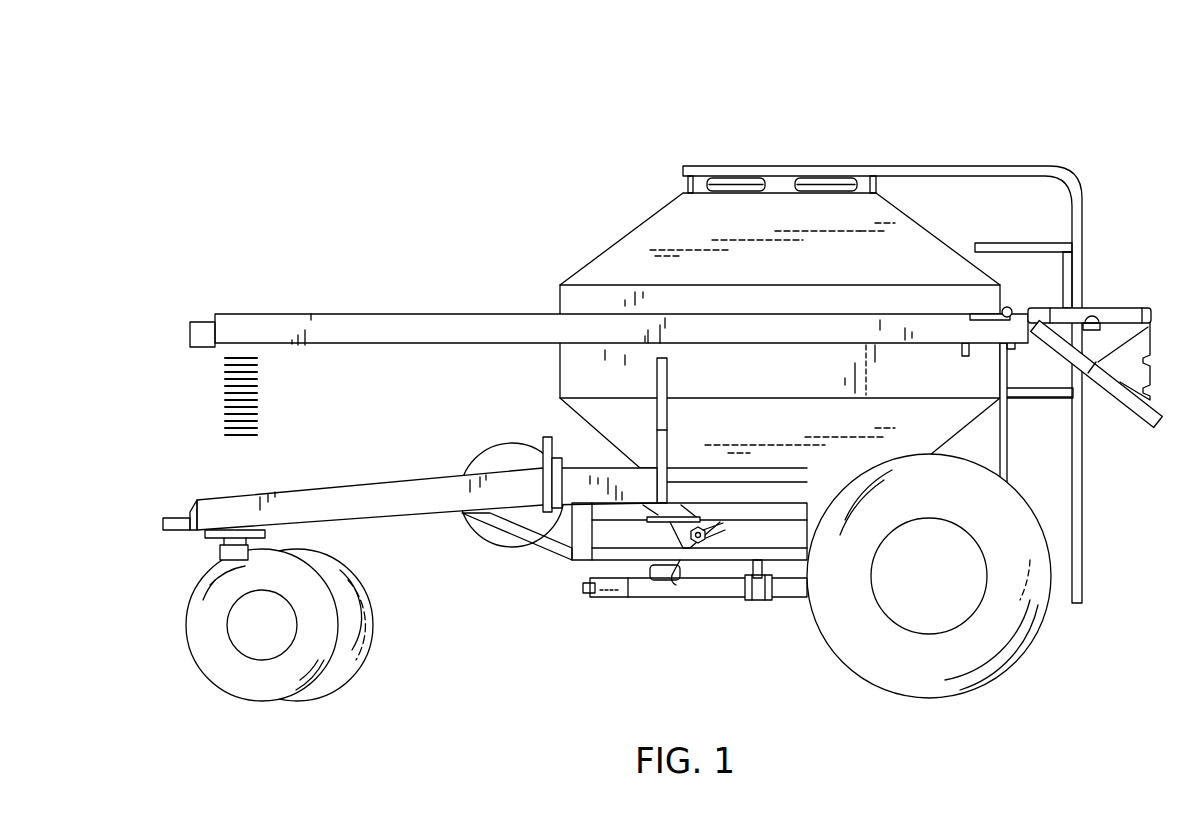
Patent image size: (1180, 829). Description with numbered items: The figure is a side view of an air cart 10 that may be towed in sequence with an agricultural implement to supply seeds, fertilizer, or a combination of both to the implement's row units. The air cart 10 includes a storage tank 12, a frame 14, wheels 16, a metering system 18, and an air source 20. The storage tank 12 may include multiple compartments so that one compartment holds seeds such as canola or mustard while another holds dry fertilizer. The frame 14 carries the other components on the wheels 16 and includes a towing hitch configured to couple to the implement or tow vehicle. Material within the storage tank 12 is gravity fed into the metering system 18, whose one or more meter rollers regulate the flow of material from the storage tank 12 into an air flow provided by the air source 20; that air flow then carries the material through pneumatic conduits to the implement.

The air cart 10 is at (652, 399).
The storage tank 12 is at (668, 228).
The frame 14 is at (370, 482).
The wheels 16 is at (212, 680).
The metering system 18 is at (720, 540).
The air source 20 is at (478, 447).